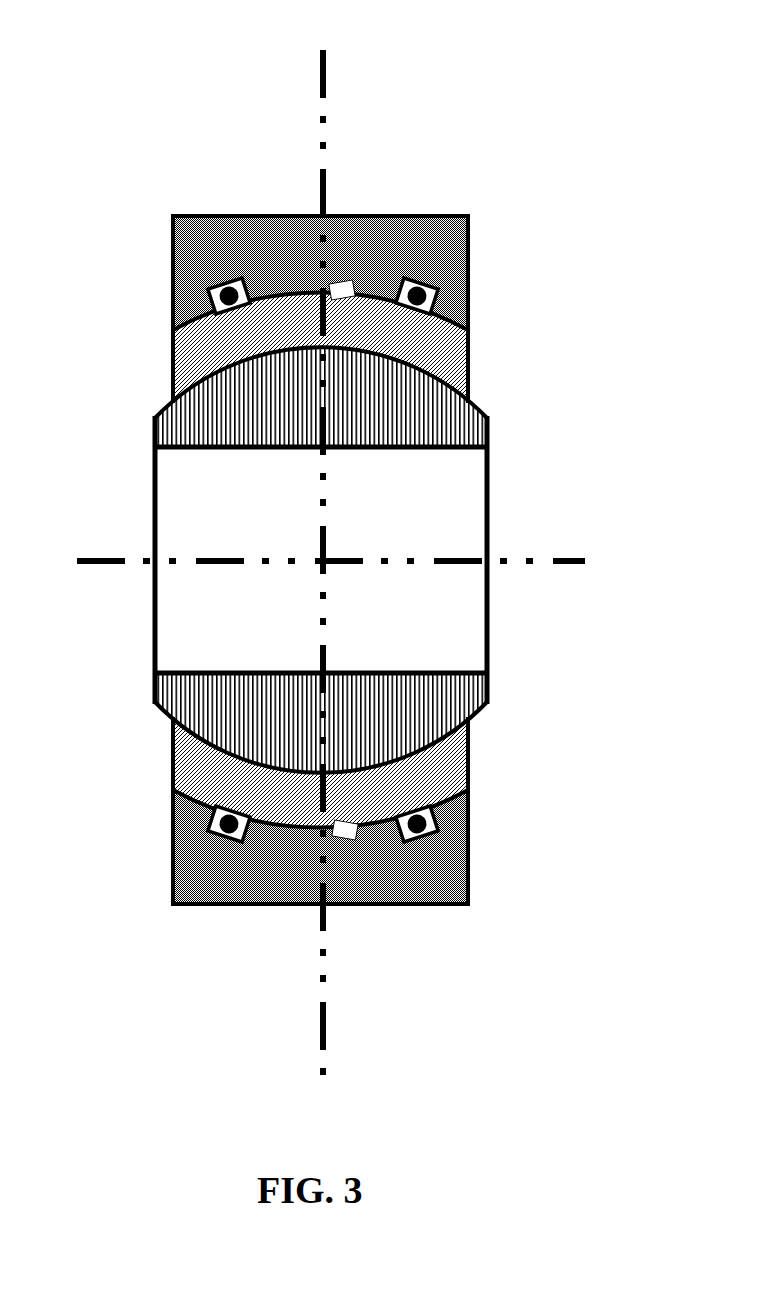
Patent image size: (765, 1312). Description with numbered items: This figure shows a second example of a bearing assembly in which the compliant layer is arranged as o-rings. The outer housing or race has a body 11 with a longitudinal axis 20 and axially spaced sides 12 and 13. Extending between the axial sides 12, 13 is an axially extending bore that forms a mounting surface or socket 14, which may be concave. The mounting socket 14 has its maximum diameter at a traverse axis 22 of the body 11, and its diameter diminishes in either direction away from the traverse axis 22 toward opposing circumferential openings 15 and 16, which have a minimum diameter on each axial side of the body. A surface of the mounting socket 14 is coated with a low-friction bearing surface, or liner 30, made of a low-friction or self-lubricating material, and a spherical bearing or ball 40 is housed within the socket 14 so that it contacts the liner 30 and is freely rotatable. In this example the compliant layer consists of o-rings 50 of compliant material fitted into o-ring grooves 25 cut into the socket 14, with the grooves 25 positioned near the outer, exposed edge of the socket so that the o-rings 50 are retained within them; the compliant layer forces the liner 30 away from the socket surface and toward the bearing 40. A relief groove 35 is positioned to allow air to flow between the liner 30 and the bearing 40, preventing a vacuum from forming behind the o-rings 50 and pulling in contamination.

The body 11 is at (297, 223).
The axial side 12 is at (171, 266).
The axial side 13 is at (470, 263).
The mounting socket 14 is at (400, 305).
The circumferential opening 15 is at (470, 333).
The circumferential opening 16 is at (172, 789).
The longitudinal axis 20 is at (527, 556).
The traverse axis 22 is at (327, 83).
The o-ring groove 25 is at (395, 290).
The liner 30 is at (420, 332).
The relief groove 35 is at (351, 286).
The bearing 40 is at (186, 423).
The o-ring 50 is at (250, 284).